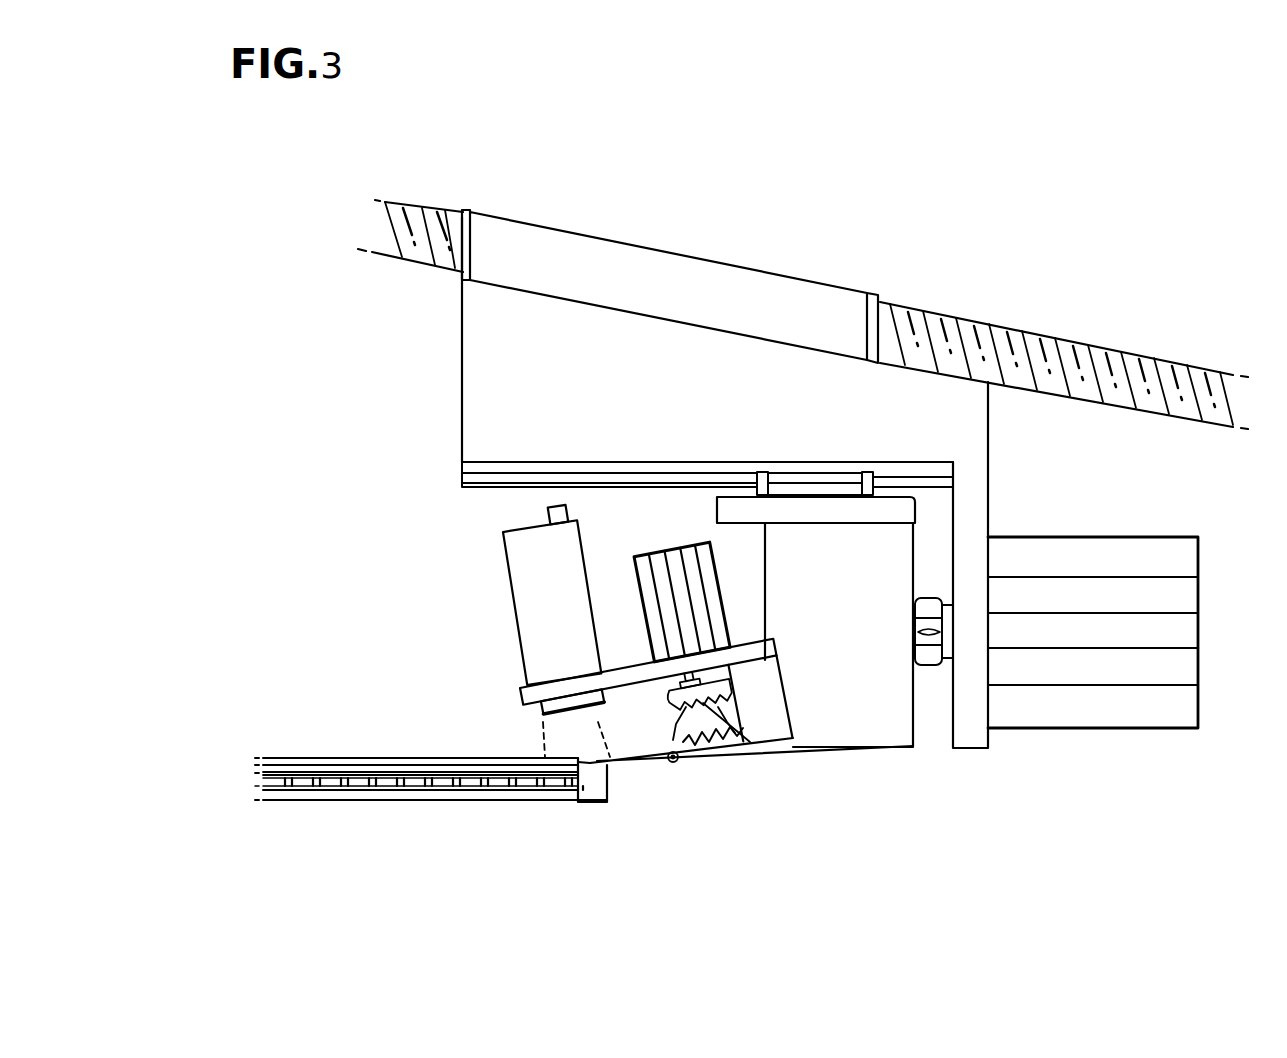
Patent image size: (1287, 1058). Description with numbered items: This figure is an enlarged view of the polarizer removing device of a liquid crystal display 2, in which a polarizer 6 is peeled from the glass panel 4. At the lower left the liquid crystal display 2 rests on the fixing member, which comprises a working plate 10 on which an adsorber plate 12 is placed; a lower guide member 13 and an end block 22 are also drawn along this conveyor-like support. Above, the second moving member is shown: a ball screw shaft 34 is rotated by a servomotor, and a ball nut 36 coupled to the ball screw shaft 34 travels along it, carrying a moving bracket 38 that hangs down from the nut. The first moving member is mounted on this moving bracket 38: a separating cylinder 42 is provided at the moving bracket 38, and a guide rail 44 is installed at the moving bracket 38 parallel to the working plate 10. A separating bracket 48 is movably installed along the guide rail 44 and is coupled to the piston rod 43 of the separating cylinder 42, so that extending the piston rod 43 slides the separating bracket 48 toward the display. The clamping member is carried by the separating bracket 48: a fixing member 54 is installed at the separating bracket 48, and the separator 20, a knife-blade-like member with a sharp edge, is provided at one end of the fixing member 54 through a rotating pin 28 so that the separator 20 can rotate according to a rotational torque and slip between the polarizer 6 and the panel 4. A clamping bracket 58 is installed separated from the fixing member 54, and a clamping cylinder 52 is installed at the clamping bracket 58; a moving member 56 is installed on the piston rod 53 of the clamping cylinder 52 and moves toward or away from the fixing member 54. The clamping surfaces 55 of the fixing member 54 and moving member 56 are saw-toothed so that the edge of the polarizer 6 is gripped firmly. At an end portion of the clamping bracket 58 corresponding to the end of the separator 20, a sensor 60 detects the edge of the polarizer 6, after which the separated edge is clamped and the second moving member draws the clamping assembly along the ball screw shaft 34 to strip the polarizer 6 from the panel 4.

The liquid crystal display 2 is at (395, 752).
The panel 4 is at (480, 772).
The polarizer 6 is at (447, 757).
The working plate 10 is at (595, 790).
The adsorber plate 12 is at (337, 783).
The chain guide 13 is at (352, 788).
The separator 20 is at (657, 762).
The transition member 22 is at (583, 788).
The rotating pin 28 is at (679, 760).
The ball screw shaft 34 is at (1018, 345).
The ball nut 36 is at (800, 290).
The moving bracket 38 is at (978, 411).
The separating cylinder 42 is at (1145, 710).
The piston rod 43 is at (949, 652).
The guide rail 44 is at (473, 473).
The separating bracket 48 is at (877, 742).
The clamping cylinder 52 is at (643, 567).
The piston rod 53 is at (686, 683).
The fixing member 54 is at (725, 745).
The clamping surfaces 55 is at (750, 742).
The moving member 56 is at (683, 710).
The clamping bracket 58 is at (747, 652).
The sensor 60 is at (525, 598).